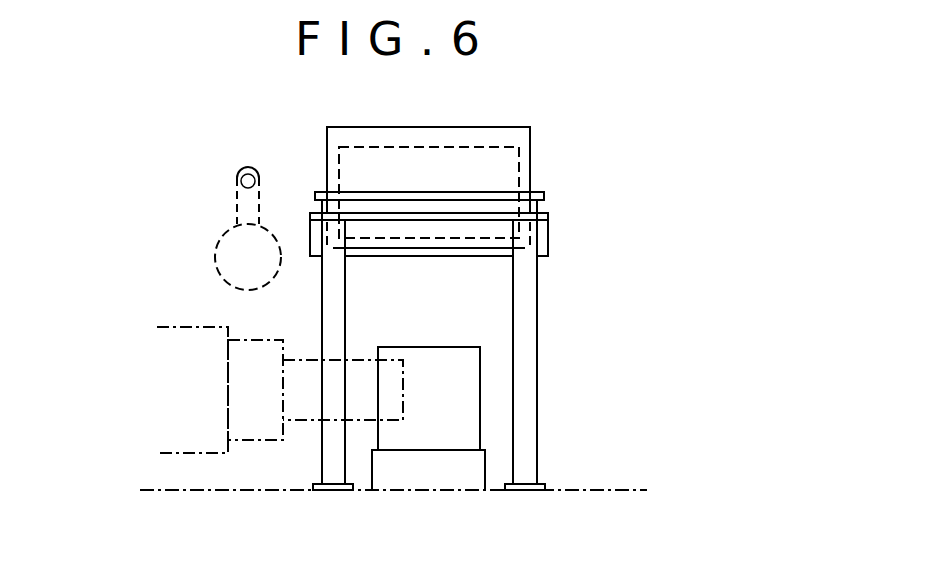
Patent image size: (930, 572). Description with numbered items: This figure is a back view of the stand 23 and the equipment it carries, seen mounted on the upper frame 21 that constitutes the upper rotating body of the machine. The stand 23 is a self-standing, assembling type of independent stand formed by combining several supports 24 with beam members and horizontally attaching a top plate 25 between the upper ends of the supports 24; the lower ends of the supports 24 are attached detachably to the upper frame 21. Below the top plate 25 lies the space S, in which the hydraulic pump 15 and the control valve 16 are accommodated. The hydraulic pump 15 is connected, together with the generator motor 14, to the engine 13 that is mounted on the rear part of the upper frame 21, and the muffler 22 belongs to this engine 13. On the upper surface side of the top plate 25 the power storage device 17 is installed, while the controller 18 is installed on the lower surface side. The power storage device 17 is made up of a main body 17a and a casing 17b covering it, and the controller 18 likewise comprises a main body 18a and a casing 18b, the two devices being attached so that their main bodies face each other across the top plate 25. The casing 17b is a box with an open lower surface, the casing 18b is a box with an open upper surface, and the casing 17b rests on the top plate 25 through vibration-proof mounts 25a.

The engine 13 is at (208, 453).
The generator motor 14 is at (258, 440).
The hydraulic pump 15 is at (360, 420).
The control valve 16 is at (482, 397).
The power storage device 17 is at (505, 185).
The main body 17a is at (540, 153).
The casing 17b is at (532, 177).
The controller 18 is at (429, 296).
The main body 18a is at (395, 253).
The casing 18b is at (475, 278).
The upper frame 21 is at (593, 488).
The muffler 22 is at (217, 235).
The stand 23 is at (446, 289).
The support 24 is at (325, 313).
The top plate 25 is at (320, 192).
The vibration-proof mount 25a is at (347, 207).
The space S is at (500, 275).